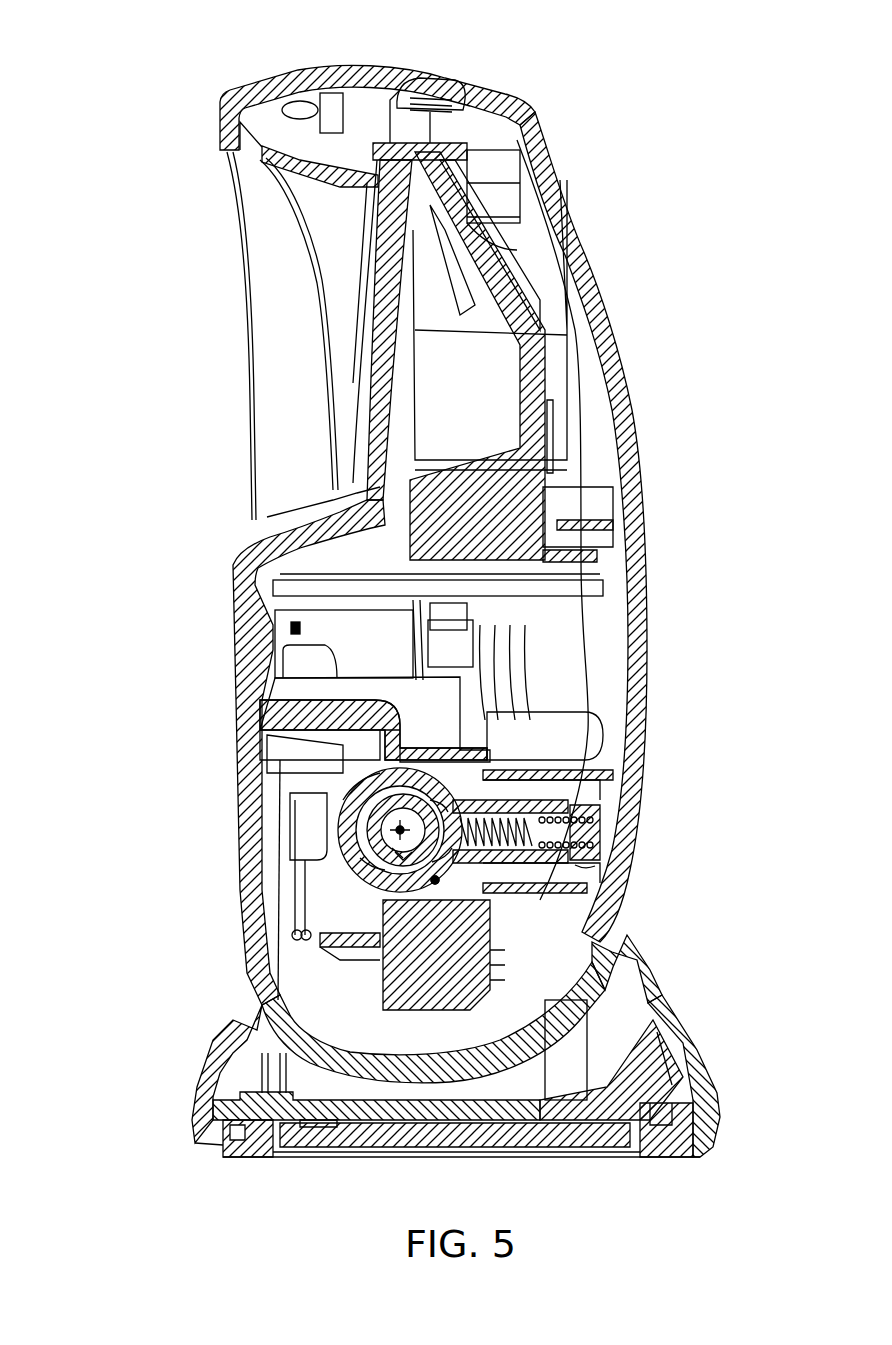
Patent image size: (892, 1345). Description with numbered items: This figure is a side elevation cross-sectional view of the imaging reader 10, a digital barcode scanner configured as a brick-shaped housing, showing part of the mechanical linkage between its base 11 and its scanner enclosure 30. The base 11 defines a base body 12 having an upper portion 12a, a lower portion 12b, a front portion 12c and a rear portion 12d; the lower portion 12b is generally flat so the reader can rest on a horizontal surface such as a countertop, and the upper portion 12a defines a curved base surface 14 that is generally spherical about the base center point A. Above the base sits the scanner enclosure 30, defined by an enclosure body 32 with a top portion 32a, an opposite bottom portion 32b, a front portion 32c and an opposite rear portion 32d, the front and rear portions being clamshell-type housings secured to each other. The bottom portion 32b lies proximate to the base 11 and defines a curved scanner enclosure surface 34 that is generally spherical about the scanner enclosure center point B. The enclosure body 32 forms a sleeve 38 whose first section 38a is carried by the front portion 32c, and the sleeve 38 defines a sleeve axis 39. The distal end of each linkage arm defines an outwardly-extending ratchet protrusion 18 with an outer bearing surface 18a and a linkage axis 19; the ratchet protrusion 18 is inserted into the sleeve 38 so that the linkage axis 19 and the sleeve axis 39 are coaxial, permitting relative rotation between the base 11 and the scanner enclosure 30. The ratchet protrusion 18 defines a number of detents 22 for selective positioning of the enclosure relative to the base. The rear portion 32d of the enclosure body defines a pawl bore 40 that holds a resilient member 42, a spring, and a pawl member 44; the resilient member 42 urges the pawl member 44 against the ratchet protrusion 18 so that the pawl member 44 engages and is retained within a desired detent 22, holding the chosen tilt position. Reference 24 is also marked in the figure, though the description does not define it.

The imaging reader 10 is at (150, 967).
The base 11 is at (678, 1015).
The base body 12 is at (660, 973).
The upper portion 12a is at (268, 1008).
The lower portion 12b is at (630, 1170).
The front portion 12c is at (160, 1110).
The rear portion 12d is at (715, 1052).
The curved base surface 14 is at (332, 1055).
The ratchet protrusion 18 is at (401, 824).
The outer bearing surface 18a is at (336, 856).
The linkage axis 19 is at (380, 856).
The detent 22 is at (487, 735).
The cam lobes 24 is at (440, 803).
The scanner enclosure 30 is at (604, 300).
The enclosure body 32 is at (556, 184).
The top portion 32a is at (428, 55).
The bottom portion 32b is at (432, 1045).
The front portion 32c is at (173, 556).
The rear portion 32d is at (660, 418).
The curved scanner enclosure surface 34 is at (517, 1123).
The sleeve 38 is at (330, 818).
The first section 38a is at (340, 793).
The sleeve axis 39 is at (397, 853).
The pawl bore 40 is at (585, 812).
The resilient member 42 is at (560, 840).
The pawl member 44 is at (580, 862).
The base center point A is at (440, 882).
The scanner enclosure center point B is at (435, 880).